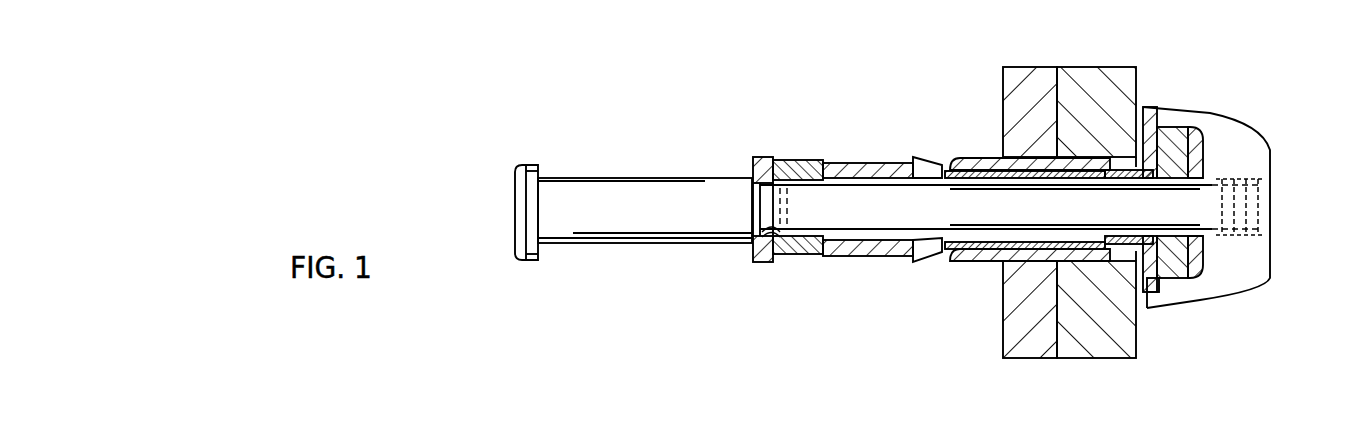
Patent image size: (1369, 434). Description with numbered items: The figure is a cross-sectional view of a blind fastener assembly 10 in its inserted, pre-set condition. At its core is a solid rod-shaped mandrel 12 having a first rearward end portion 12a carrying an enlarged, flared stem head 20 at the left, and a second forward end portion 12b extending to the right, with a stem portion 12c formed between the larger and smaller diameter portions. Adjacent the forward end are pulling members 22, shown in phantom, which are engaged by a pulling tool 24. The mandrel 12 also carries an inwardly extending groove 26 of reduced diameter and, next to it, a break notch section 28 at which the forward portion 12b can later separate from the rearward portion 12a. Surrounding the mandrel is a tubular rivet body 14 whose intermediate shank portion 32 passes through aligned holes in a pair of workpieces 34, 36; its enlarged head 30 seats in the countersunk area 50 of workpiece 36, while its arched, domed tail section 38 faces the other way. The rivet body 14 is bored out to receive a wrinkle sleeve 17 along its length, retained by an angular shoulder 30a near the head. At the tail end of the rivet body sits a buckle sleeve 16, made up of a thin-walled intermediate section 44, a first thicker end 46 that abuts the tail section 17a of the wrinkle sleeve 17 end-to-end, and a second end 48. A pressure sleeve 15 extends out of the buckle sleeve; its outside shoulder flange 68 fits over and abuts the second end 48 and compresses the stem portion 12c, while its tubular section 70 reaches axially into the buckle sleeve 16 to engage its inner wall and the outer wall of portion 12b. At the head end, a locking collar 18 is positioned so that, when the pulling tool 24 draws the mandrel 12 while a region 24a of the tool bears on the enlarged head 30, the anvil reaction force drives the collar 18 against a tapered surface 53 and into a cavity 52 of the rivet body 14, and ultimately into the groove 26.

The blind fastener assembly 10 is at (563, 133).
The mandrel 12 is at (641, 190).
The first rearward end portion 12a is at (577, 178).
The second forward end portion 12b is at (855, 195).
The stem portion 12c is at (720, 240).
The tubular rivet body 14 is at (980, 163).
The pressure sleeve 15 is at (790, 176).
The buckle sleeve 16 is at (870, 163).
The wrinkle sleeve 17 is at (1050, 157).
The tail section 17a is at (935, 257).
The locking collar 18 is at (1160, 130).
The stem head 20 is at (519, 168).
The pulling members 22 is at (1265, 185).
The pulling tool 24 is at (1225, 135).
The region of the pulling tool 24a is at (1175, 293).
The groove 26 is at (768, 158).
The break notch section 28 is at (805, 260).
The enlarged head 30 is at (1122, 170).
The angular shoulder 30a is at (1112, 240).
The intermediate shank portion 32 is at (1030, 252).
The workpiece 34 is at (1018, 92).
The workpiece 36 is at (1087, 87).
The domed tail section 38 is at (953, 252).
The intermediate section 44 is at (850, 257).
The first thicker end 46 is at (920, 160).
The second end 48 is at (776, 262).
The countersunk area 50 is at (1152, 293).
The cavity 52 is at (1128, 176).
The tapered surface 53 is at (1100, 270).
The shoulder flange 68 is at (753, 163).
The tubular section 70 is at (815, 178).